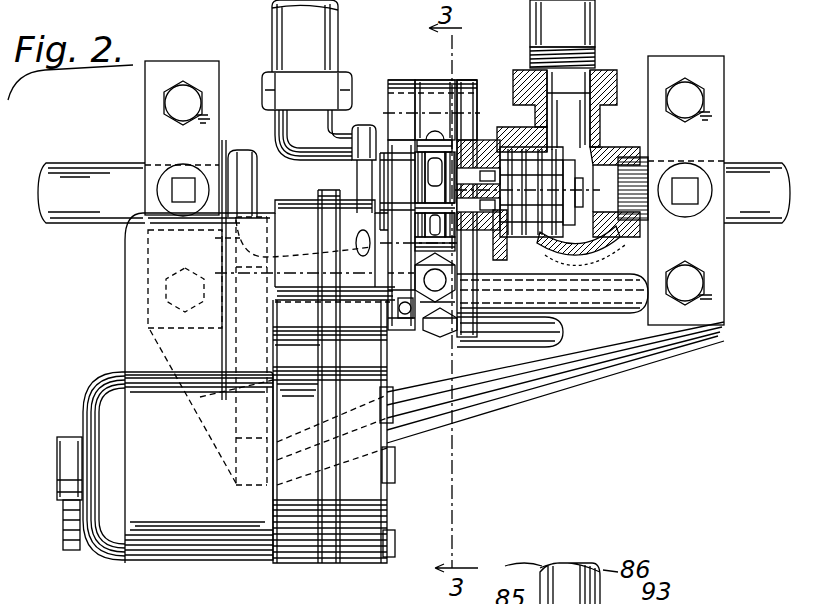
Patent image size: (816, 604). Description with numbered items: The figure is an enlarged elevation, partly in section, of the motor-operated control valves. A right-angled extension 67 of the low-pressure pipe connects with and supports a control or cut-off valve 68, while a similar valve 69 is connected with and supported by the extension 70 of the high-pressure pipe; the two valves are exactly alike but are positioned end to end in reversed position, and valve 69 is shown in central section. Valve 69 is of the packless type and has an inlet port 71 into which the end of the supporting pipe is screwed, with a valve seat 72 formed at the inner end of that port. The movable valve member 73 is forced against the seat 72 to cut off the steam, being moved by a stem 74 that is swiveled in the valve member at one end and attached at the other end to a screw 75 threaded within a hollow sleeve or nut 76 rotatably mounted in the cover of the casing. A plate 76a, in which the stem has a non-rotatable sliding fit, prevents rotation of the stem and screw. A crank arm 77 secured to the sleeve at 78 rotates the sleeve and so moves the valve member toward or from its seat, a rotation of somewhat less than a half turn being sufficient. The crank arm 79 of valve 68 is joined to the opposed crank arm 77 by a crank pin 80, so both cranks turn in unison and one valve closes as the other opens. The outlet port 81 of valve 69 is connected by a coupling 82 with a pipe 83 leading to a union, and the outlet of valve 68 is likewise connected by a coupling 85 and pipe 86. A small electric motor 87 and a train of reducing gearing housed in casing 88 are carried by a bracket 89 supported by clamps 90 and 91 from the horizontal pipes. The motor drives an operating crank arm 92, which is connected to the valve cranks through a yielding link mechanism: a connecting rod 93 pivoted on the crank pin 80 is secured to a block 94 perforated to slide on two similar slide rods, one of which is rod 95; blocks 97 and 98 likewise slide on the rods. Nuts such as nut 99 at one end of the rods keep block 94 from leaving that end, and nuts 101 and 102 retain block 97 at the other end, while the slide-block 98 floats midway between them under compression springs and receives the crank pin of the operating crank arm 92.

The right-angled extension 67 is at (82, 173).
The control or cut-off valve 68 is at (284, 160).
The control or cut-off valve 69 is at (590, 122).
The extension 70 is at (771, 160).
The inlet port 71 is at (598, 147).
The valve seat 72 is at (606, 240).
The movable valve member 73 is at (548, 238).
The stem 74 is at (542, 240).
The screw 75 is at (495, 235).
The hollow sleeve or nut 76 is at (520, 235).
The plate 76a is at (512, 332).
The crank arm 77 is at (477, 130).
The securing point of crank arm 78 is at (458, 215).
The crank arm 79 is at (392, 90).
The crank pin 80 is at (464, 82).
The outlet port 81 is at (614, 78).
The coupling 82 is at (600, 66).
The pipe 83 is at (594, 12).
The coupling 85 is at (345, 72).
The pipe 86 is at (272, 42).
The electric motor 87 is at (186, 545).
The casing 88 is at (360, 520).
The bracket 89 is at (657, 347).
The clamp 90 is at (145, 88).
The clamp 91 is at (724, 128).
The operating crank arm 92 is at (402, 258).
The connecting rod 93 is at (433, 80).
The block 94 is at (414, 147).
The slide rod 95 is at (415, 186).
The block 97 is at (471, 305).
The slide-block 98 is at (415, 212).
The nut 99 is at (435, 126).
The nut 101 is at (439, 282).
The nut 102 is at (455, 335).